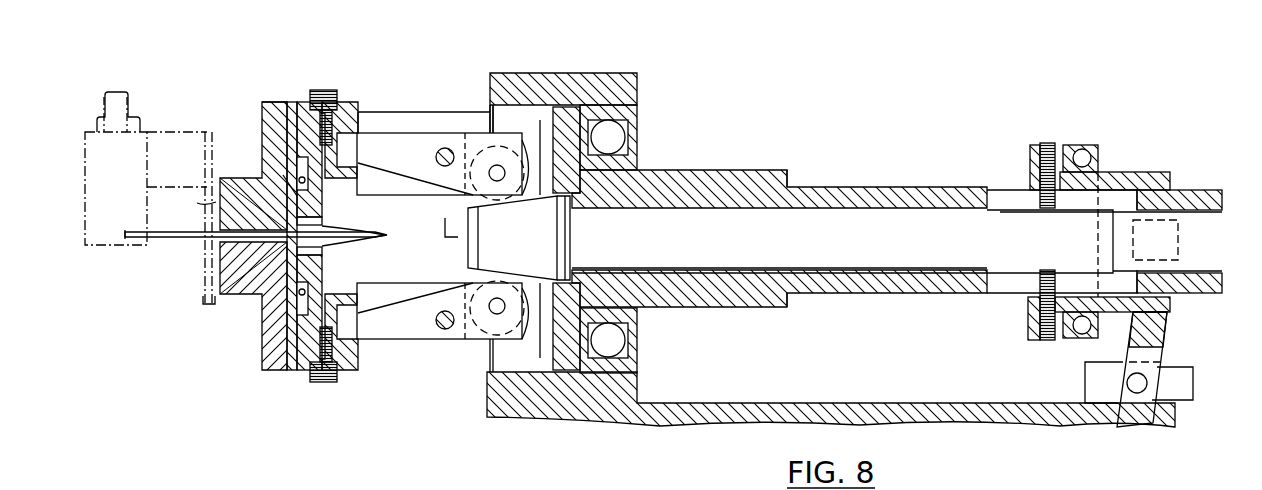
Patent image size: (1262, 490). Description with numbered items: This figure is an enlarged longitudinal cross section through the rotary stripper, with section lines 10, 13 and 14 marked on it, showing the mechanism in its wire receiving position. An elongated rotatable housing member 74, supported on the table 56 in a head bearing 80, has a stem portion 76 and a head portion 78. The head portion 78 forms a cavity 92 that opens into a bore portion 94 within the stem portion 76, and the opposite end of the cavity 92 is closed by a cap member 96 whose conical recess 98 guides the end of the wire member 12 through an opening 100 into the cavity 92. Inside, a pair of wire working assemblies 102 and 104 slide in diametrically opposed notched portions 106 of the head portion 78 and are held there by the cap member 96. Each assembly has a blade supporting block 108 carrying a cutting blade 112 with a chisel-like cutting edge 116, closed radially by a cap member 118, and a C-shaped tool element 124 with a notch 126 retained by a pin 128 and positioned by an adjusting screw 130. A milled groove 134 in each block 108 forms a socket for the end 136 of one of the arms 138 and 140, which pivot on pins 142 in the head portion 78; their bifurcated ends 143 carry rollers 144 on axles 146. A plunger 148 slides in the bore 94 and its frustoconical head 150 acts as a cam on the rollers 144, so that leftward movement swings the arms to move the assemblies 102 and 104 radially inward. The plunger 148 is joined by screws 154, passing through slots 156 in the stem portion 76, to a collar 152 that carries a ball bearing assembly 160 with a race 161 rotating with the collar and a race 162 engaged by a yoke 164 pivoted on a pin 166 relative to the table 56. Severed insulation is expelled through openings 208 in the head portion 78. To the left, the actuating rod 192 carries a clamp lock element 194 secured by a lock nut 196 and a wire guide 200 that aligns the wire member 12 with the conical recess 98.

The section line 10 is at (287, 72).
The wire member 12 is at (180, 239).
The section line 13 is at (348, 87).
The section line 14 is at (447, 80).
The table 56 is at (703, 407).
The rotatable housing member 74 is at (706, 168).
The stem portion 76 is at (793, 187).
The head portion 78 is at (404, 110).
The head bearing 80 is at (620, 132).
The cavity 92 is at (418, 118).
The bore portion 94 is at (882, 213).
The cap member 96 is at (262, 122).
The conical recess 98 is at (192, 203).
The opening 100 is at (280, 243).
The wire working assembly 102 is at (262, 110).
The wire working assembly 104 is at (262, 356).
The notched portion 106 is at (352, 357).
The blade supporting block 108 is at (350, 115).
The cutting blade 112 is at (292, 155).
The cutting edge 116 is at (291, 205).
The cap member 118 is at (293, 118).
The tool element 124 is at (324, 213).
The notch 126 is at (372, 237).
The pin 128 is at (299, 178).
The adjusting screw 130 is at (324, 385).
The milled groove 134 is at (345, 168).
The arm end 136 is at (353, 143).
The arm 138 is at (418, 168).
The arm 140 is at (413, 328).
The pin 142 is at (447, 148).
The bifurcation 143 is at (493, 132).
The roller 144 is at (563, 182).
The axle 146 is at (500, 166).
The plunger 148 is at (820, 223).
The frustoconical head 150 is at (538, 237).
The collar 152 is at (1030, 148).
The screw 154 is at (1044, 144).
The slot 156 is at (1010, 295).
The ball bearing assembly 160 is at (1102, 143).
The race 161 is at (1073, 145).
The race 162 is at (1100, 163).
The yoke 164 is at (1160, 338).
The pin 166 is at (1147, 381).
The actuating rod 192 is at (106, 108).
The clamp lock element 194 is at (109, 247).
The lock nut 196 is at (142, 120).
The wire guide 200 is at (204, 297).
The opening 208 is at (377, 213).